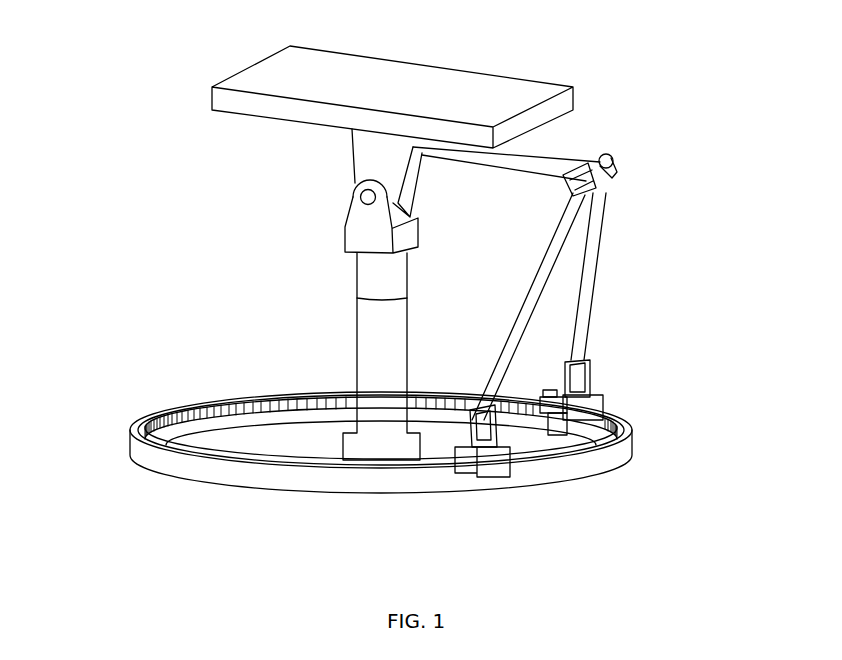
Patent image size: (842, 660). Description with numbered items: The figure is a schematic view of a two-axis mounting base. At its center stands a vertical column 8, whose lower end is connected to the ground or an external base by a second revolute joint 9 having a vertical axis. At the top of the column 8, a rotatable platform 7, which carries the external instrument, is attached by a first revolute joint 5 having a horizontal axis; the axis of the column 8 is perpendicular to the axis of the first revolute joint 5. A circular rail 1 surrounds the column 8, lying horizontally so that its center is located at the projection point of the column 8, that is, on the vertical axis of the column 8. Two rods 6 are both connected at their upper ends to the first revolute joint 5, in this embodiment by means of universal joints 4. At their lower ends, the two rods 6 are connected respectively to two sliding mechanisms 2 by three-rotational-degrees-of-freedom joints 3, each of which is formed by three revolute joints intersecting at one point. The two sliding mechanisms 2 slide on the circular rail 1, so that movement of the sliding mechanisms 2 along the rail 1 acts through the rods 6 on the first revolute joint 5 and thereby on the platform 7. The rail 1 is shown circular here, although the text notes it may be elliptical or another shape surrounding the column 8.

The circular rail 1 is at (153, 417).
The sliding mechanism 2 is at (493, 470).
The three-rotational-degrees-of-freedom joint 3 is at (592, 367).
The universal joint 4 is at (617, 177).
The first revolute joint 5 is at (365, 156).
The rod 6 is at (593, 268).
The rotatable platform 7 is at (518, 96).
The vertical column 8 is at (377, 363).
The second revolute joint 9 is at (372, 278).